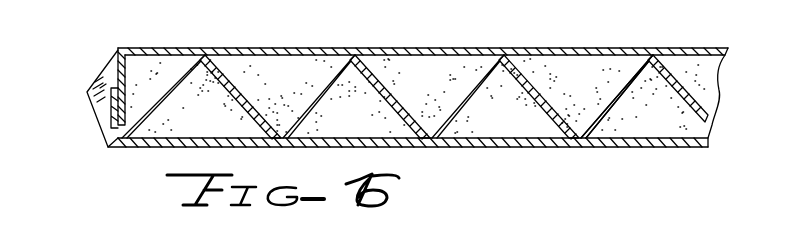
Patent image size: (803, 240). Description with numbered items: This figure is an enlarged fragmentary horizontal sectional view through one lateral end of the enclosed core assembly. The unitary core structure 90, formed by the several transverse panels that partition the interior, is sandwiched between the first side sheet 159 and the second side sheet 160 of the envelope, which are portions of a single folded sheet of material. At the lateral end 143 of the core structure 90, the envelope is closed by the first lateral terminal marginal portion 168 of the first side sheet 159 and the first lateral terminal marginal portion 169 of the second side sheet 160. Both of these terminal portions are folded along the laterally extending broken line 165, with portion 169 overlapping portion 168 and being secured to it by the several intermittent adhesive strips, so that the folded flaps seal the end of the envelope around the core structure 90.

The first side sheet 159 is at (393, 48).
The second side sheet 160 is at (456, 148).
The second lateral edge of core structure 143 is at (162, 134).
The first laterally extending broken line 165 is at (122, 50).
The first lateral terminal marginal portion of first side sheet 168 is at (116, 52).
The first lateral terminal marginal portion of second side sheet 169 is at (111, 105).
The unitary core structure 90 is at (605, 120).